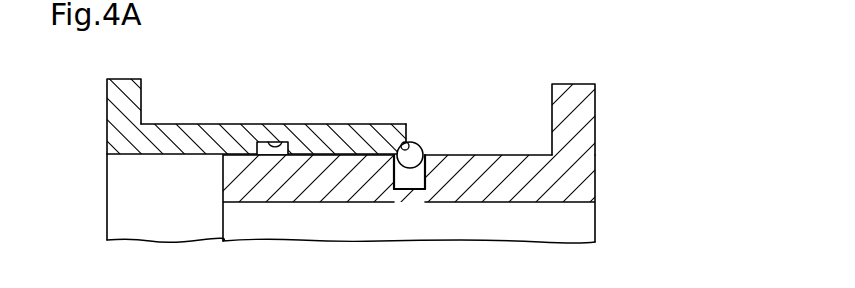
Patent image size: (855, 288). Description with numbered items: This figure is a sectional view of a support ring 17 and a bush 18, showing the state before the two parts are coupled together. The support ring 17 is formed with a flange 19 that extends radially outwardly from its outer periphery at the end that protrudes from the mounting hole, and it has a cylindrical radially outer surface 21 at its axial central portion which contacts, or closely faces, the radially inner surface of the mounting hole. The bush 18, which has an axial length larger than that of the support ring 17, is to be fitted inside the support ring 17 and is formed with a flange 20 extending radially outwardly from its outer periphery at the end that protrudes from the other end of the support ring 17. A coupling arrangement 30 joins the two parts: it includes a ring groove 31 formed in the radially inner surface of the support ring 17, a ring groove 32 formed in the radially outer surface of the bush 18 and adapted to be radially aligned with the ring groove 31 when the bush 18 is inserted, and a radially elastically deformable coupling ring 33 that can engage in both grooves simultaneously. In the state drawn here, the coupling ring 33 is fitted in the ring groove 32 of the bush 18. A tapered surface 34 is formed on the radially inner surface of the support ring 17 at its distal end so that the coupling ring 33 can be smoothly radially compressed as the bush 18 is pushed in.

The support ring 17 is at (186, 130).
The bush 18 is at (495, 168).
The flange 19 is at (118, 102).
The flange 20 is at (587, 102).
The cylindrical radially outer surface 21 is at (230, 125).
The coupling arrangement 30 is at (418, 141).
The ring groove 31 is at (280, 146).
The ring groove 32 is at (415, 191).
The coupling ring 33 is at (402, 164).
The tapered surface 34 is at (410, 163).